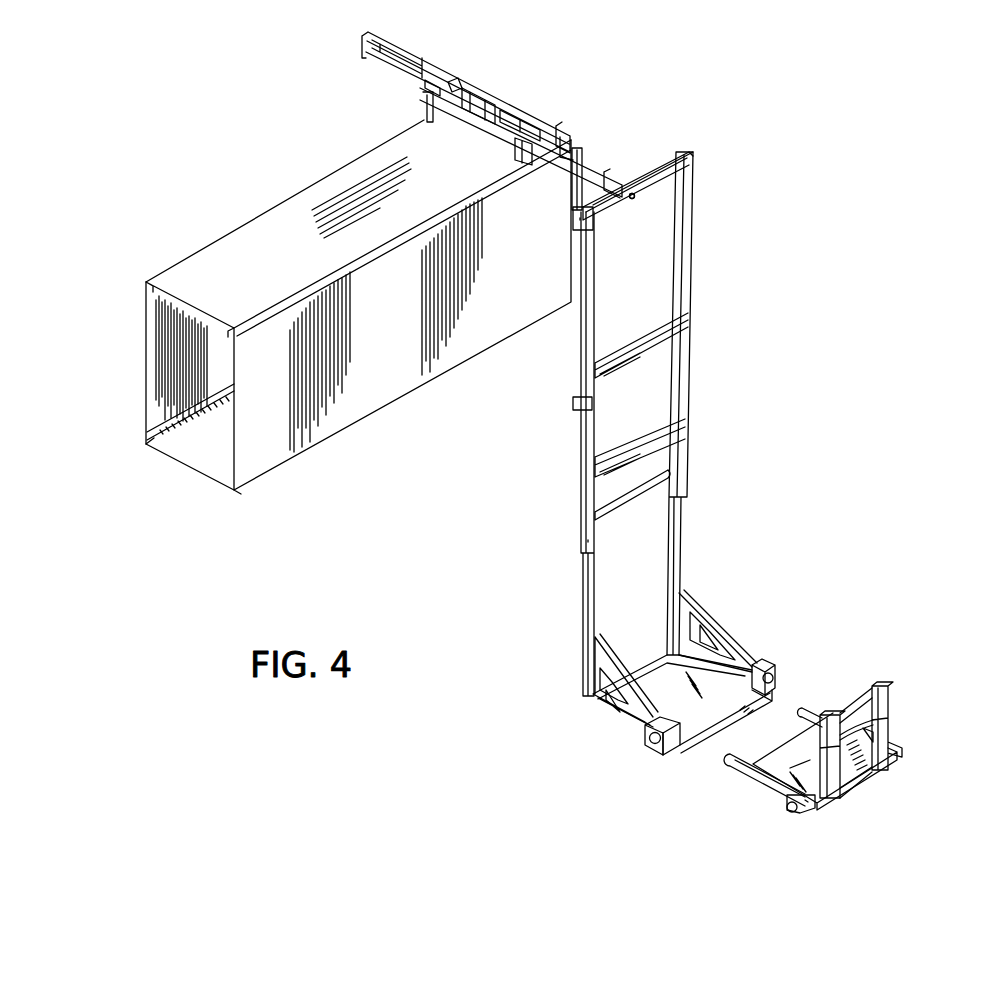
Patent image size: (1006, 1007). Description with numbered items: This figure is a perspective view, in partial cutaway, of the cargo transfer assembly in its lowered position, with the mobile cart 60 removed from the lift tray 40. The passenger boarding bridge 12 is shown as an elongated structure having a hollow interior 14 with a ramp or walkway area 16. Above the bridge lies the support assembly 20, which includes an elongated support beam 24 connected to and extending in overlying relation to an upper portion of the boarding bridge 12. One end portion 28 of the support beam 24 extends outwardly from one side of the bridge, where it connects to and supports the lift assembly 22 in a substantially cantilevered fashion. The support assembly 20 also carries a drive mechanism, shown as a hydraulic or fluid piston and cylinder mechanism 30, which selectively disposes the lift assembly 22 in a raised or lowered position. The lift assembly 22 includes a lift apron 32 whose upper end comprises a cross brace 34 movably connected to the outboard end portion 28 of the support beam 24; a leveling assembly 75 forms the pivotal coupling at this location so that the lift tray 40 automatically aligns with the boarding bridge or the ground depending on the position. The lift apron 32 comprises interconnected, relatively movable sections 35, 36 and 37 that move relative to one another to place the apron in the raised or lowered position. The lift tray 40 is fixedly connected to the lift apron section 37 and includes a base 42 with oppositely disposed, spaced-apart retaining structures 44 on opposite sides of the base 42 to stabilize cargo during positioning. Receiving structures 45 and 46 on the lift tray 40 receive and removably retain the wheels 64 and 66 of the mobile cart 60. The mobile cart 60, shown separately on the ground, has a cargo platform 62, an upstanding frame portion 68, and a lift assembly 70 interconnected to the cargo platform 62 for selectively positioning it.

The passenger boarding bridge 12 is at (303, 154).
The hollow interior 14 is at (227, 375).
The ramp or walkway area 16 is at (204, 445).
The support assembly 20 is at (530, 98).
The lift assembly 22 is at (702, 190).
The support beam 24 is at (496, 136).
The outboard end portion of the support beam 28 is at (592, 155).
The piston and cylinder mechanism 30 is at (423, 61).
The lift apron 32 is at (573, 445).
The cross brace 34 is at (679, 152).
The lift apron section 35 is at (692, 266).
The lift apron section 36 is at (684, 387).
The lift apron section 37 is at (684, 520).
The lift tray 40 is at (596, 725).
The base 42 is at (662, 697).
The retaining structures 44 is at (681, 600).
The receiving structure 45 is at (693, 630).
The receiving structure 46 is at (770, 662).
The mobile cart 60 is at (907, 693).
The cargo platform 62 is at (796, 757).
The wheel 64 is at (805, 712).
The wheel 66 is at (790, 803).
The frame portion 68 is at (912, 721).
The lift assembly of the mobile cart 70 is at (633, 199).
The leveling assembly 75 is at (634, 200).